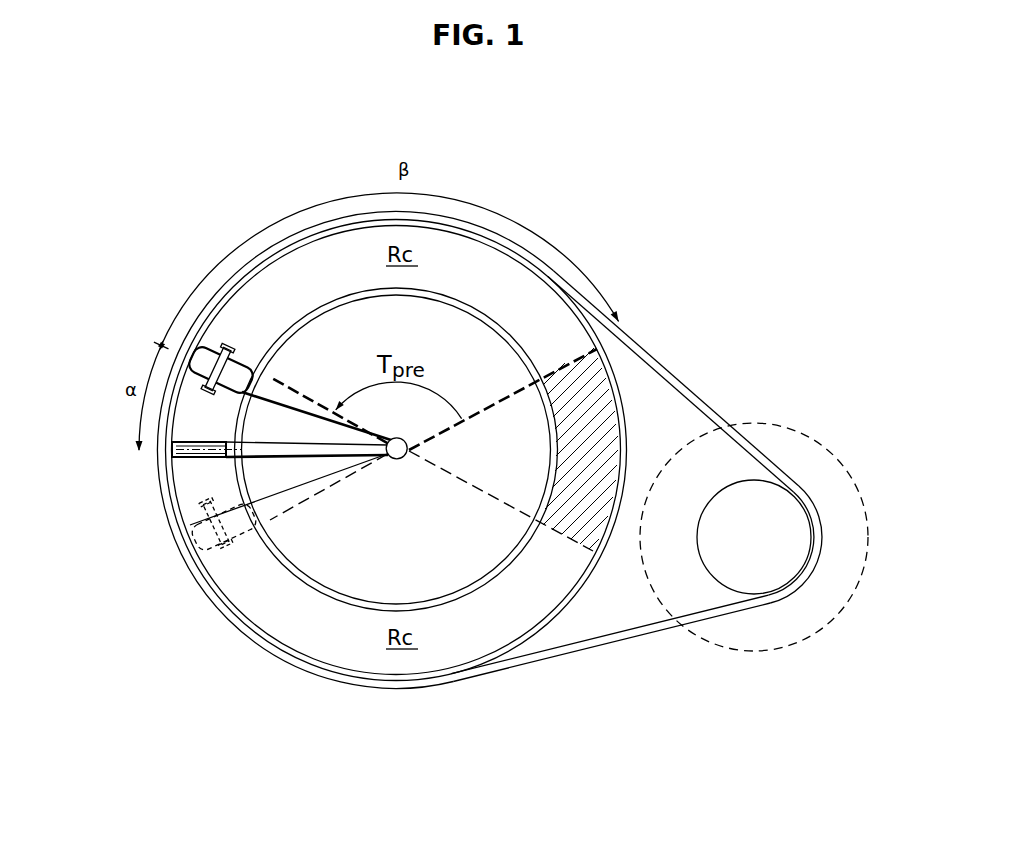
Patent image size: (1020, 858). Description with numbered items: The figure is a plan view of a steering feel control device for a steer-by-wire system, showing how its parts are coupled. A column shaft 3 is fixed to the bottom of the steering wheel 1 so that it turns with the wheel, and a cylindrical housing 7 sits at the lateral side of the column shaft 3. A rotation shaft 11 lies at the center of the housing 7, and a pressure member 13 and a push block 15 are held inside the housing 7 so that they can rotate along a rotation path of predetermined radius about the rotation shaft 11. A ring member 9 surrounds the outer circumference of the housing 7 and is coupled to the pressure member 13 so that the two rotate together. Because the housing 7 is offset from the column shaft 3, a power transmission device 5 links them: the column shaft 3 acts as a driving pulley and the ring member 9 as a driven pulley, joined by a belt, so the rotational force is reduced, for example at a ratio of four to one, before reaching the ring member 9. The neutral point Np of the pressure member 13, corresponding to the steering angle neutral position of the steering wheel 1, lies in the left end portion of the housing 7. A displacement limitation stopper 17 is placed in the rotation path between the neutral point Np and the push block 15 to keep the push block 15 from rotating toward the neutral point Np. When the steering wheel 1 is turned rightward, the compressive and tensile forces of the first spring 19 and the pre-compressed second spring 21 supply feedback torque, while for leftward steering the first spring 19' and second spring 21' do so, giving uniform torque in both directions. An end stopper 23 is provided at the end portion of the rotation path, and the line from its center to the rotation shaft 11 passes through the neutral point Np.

The steering wheel 1 is at (809, 437).
The column shaft 3 is at (757, 575).
The power transmission device 5 is at (716, 409).
The housing 7 is at (466, 291).
The ring member 9 is at (571, 607).
The rotation shaft 11 is at (403, 456).
The pressure member 13 is at (174, 443).
The push block 15 is at (197, 352).
The displacement limitation stopper 17 is at (188, 372).
The first spring 19 is at (249, 472).
The first spring 19' is at (288, 583).
The second spring 21 is at (305, 308).
The second spring 21' is at (328, 593).
The end stopper 23 is at (598, 378).
The neutral point Np is at (172, 462).